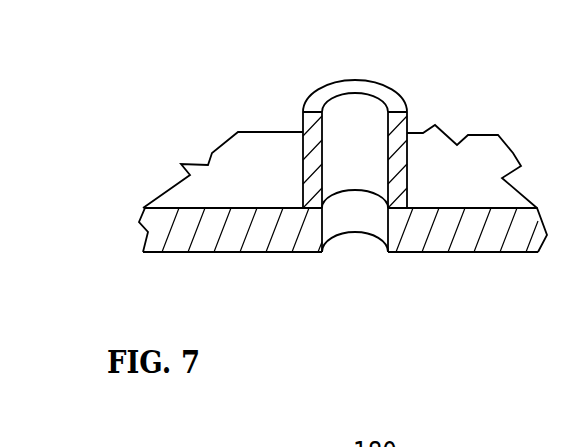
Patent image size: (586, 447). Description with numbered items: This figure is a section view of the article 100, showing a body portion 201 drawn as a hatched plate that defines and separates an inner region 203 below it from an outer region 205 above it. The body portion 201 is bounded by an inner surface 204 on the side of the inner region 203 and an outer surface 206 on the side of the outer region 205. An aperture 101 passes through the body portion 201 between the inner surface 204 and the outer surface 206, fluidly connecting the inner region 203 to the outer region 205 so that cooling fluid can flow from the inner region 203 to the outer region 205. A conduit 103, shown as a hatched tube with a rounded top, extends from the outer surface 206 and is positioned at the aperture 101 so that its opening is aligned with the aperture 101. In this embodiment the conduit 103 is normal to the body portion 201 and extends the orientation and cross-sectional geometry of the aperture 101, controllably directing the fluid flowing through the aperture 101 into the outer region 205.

The article 100 is at (178, 134).
The aperture 101 is at (348, 248).
The conduit 103 is at (402, 92).
The body portion 201 is at (140, 220).
The inner region 203 is at (478, 297).
The inner surface 204 is at (178, 255).
The outer region 205 is at (268, 86).
The outer surface 206 is at (482, 184).